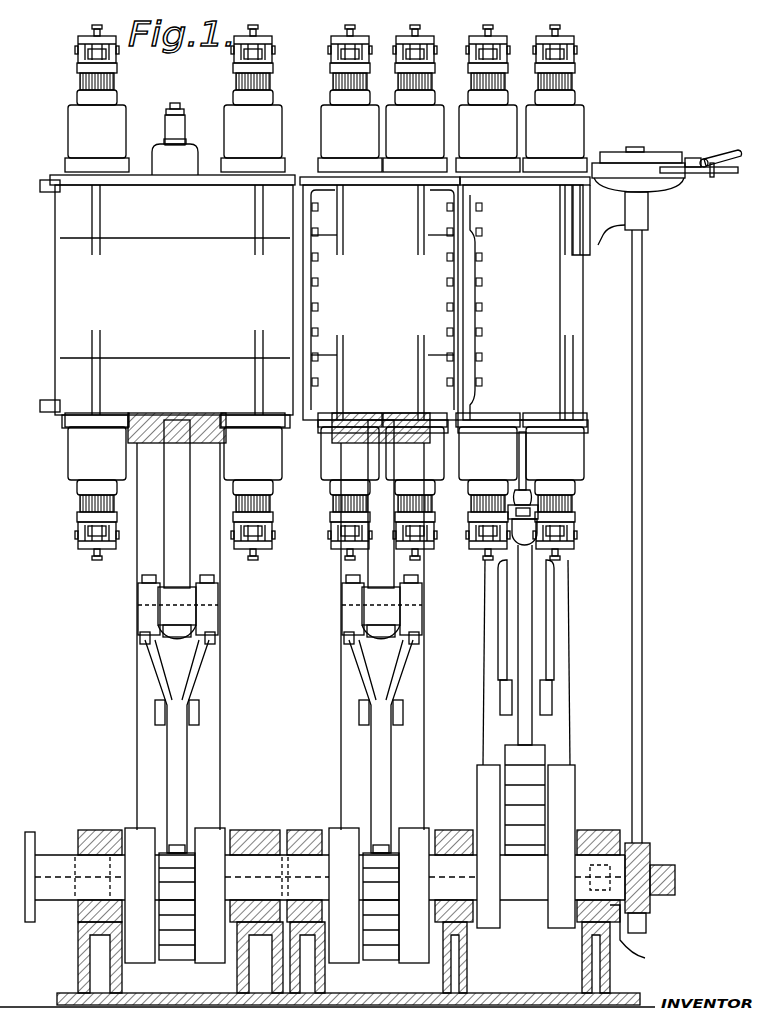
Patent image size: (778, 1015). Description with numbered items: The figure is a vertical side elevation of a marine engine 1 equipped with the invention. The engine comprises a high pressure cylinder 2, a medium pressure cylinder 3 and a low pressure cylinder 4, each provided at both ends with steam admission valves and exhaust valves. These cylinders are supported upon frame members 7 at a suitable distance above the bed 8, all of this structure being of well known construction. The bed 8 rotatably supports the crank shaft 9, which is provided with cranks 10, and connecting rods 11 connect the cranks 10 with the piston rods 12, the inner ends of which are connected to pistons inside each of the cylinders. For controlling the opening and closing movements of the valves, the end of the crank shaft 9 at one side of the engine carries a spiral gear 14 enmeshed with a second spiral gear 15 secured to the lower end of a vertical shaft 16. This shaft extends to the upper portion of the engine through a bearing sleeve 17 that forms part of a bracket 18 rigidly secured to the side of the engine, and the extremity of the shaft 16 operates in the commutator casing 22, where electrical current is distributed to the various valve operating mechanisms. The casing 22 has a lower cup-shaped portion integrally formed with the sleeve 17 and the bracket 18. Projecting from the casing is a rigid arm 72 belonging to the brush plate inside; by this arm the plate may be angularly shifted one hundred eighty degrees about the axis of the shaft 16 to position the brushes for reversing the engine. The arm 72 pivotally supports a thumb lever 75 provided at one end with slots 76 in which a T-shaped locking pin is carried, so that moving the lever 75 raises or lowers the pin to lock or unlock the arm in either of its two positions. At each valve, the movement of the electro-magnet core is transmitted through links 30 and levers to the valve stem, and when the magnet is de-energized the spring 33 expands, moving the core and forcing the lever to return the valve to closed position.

The marine engine 1 is at (135, 640).
The high pressure cylinder 2 is at (524, 305).
The medium pressure cylinder 3 is at (380, 305).
The low pressure cylinder 4 is at (167, 301).
The frame members 7 is at (140, 780).
The bed 8 is at (345, 963).
The crank shaft 9 is at (325, 877).
The cranks 10 is at (195, 960).
The connecting rods 11 is at (190, 790).
The piston rods 12 is at (175, 560).
The spiral gear 14 is at (652, 910).
The spiral gear 15 is at (668, 865).
The vertical shaft 16 is at (642, 776).
The bearing sleeve 17 is at (650, 220).
The bracket 18 is at (602, 242).
The commutator casing 22 is at (674, 188).
The links 30 is at (78, 66).
The spring 33 is at (79, 510).
The rigid arm 72 is at (722, 174).
The thumb lever 75 is at (742, 147).
The slots 76 is at (695, 158).